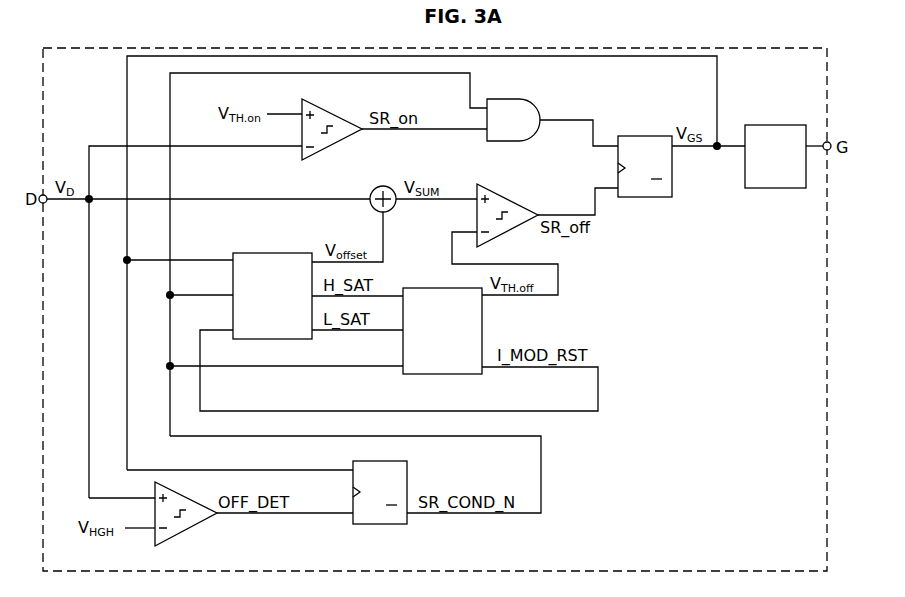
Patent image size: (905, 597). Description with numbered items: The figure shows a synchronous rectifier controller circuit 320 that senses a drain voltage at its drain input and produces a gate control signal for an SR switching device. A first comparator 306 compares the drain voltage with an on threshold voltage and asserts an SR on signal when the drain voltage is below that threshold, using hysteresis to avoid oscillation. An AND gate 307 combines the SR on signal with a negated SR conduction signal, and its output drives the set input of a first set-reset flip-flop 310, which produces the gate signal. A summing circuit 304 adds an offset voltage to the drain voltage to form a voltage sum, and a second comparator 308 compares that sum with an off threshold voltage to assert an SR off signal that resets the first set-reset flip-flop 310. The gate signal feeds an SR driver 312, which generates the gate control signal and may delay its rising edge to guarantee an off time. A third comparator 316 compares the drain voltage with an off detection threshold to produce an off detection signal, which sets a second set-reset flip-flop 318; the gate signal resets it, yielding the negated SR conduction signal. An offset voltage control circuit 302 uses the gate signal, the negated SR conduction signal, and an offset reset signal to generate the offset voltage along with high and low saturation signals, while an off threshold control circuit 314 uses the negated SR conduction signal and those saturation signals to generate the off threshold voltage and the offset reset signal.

The offset voltage control circuit 302 is at (270, 253).
The summing circuit 304 is at (372, 190).
The first comparator 306 is at (338, 108).
The AND gate 307 is at (535, 101).
The second comparator 308 is at (512, 190).
The first set-reset flip-flop 310 is at (647, 197).
The SR driver 312 is at (765, 188).
The off threshold control circuit 314 is at (431, 374).
The third comparator 316 is at (190, 530).
The second set-reset flip-flop 318 is at (380, 524).
The SR controller circuit 320 is at (197, 48).